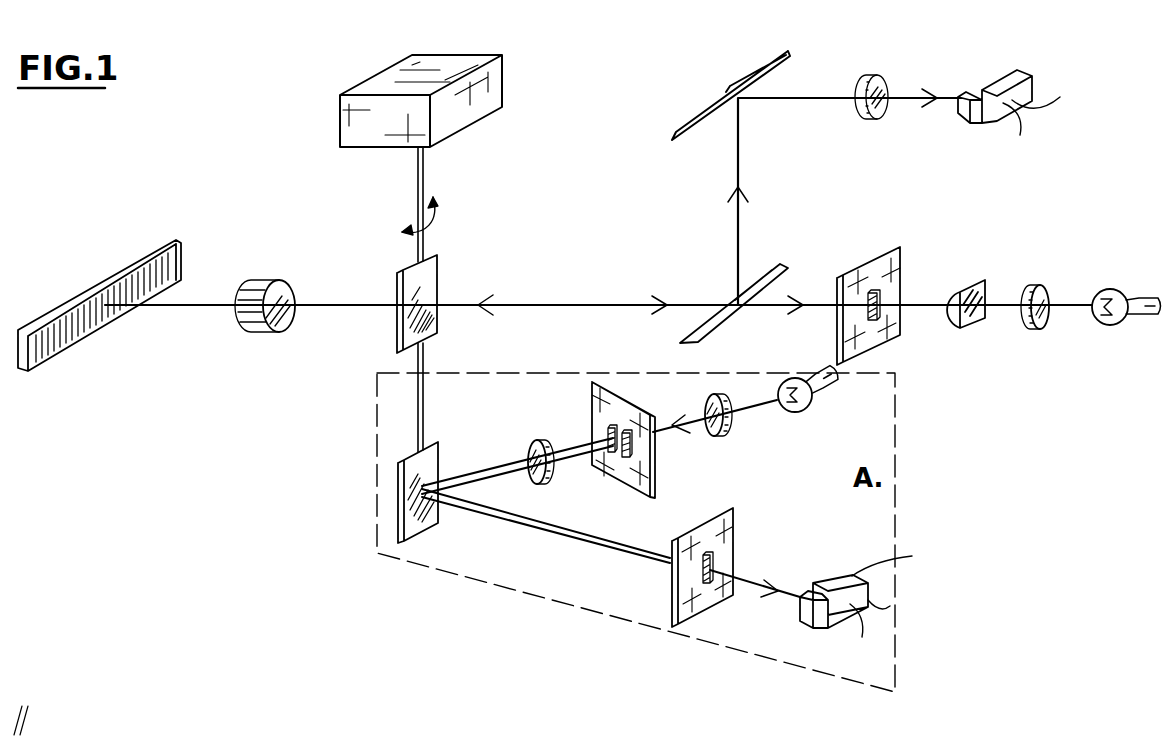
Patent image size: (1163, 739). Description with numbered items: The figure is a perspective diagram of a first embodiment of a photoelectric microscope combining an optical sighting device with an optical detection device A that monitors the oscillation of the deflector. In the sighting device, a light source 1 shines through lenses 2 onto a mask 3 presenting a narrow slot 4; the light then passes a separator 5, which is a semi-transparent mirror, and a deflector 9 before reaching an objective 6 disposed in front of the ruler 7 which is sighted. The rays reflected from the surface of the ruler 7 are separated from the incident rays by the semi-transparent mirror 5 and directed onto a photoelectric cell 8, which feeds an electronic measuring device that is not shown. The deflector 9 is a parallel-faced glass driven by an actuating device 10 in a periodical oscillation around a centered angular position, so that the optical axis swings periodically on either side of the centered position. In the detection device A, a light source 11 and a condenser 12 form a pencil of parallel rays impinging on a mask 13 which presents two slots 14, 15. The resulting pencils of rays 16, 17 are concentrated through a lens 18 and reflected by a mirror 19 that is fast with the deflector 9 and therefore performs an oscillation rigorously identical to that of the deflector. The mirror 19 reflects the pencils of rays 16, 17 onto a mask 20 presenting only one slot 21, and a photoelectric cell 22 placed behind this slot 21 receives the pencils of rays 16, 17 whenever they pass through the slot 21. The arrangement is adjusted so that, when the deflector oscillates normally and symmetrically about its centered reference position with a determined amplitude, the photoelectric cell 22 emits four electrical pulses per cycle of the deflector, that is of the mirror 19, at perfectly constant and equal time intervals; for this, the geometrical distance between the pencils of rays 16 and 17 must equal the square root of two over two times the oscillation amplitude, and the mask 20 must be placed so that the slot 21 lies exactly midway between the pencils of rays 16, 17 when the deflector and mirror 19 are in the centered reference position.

The light source 1 is at (1125, 294).
The lenses 2 is at (1043, 275).
The mask 3 is at (887, 300).
The narrow slot 4 is at (878, 297).
The separator 5 is at (768, 274).
The objective 6 is at (290, 290).
The ruler 7 is at (180, 268).
The photoelectric cell 8 is at (1027, 80).
The deflector 9 is at (430, 276).
The actuating device 10 is at (502, 97).
The light source 11 is at (810, 401).
The condenser 12 is at (729, 428).
The mask 13 is at (627, 421).
The slot 14 is at (608, 430).
The slot 15 is at (633, 452).
The pencil of rays 16 is at (558, 448).
The pencil of rays 17 is at (578, 458).
The lens 18 is at (528, 456).
The mirror 19 is at (436, 453).
The mask 20 is at (725, 567).
The slot 21 is at (712, 561).
The photoelectric cell 22 is at (822, 630).